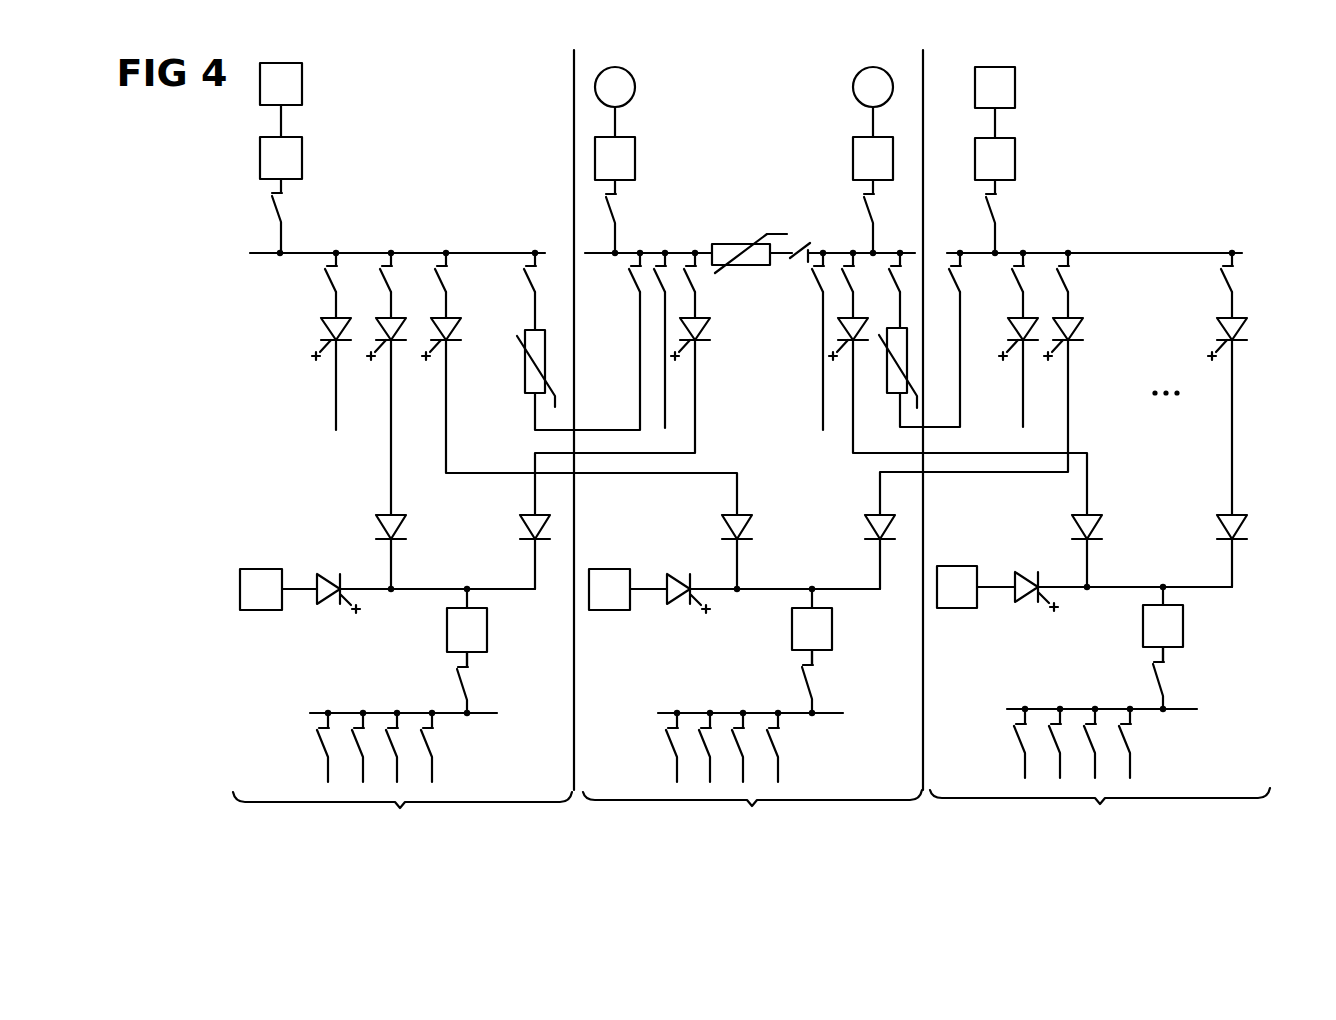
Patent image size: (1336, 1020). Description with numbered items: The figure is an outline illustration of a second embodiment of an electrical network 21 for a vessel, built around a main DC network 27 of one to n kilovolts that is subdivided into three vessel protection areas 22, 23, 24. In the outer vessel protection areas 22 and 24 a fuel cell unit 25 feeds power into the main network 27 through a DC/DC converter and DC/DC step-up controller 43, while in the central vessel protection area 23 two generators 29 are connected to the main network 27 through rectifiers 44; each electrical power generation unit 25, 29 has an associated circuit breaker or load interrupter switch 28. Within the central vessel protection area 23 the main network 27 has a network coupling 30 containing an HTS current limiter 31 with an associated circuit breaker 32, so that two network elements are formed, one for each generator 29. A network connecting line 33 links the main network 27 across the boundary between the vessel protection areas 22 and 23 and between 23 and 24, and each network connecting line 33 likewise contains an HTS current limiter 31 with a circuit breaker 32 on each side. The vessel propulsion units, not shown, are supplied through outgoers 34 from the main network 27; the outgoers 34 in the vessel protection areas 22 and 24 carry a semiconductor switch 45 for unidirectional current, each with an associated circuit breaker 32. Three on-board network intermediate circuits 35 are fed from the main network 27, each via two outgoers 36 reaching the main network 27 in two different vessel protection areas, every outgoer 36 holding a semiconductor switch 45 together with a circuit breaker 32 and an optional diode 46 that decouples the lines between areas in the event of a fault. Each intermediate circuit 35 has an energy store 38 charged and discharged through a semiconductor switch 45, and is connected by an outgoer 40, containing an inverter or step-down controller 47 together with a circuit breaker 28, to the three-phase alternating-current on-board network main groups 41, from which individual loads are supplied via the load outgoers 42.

The electrical network 21 is at (1168, 163).
The vessel protection area 22 is at (402, 820).
The vessel protection area 23 is at (752, 818).
The vessel protection area 24 is at (1100, 817).
The fuel cell unit 25 is at (1058, 80).
The main network 27 is at (1200, 252).
The circuit breaker or load interrupter switch 28 is at (267, 203).
The generator 29 is at (853, 87).
The network coupling 30 is at (777, 260).
The HTS current limiter 31 is at (523, 365).
The circuit breaker 32 is at (323, 282).
The network connecting line 33 is at (612, 427).
The outgoer 34 is at (333, 378).
The on-board network intermediate circuit 35 is at (377, 593).
The outgoer 36 is at (388, 424).
The energy store 38 is at (262, 569).
The outgoer 40 is at (467, 662).
The on-board network main group 41 is at (448, 713).
The load outgoer 42 is at (433, 762).
The DC/DC step-up controller 43 is at (1058, 152).
The rectifier 44 is at (853, 150).
The semiconductor switch 45 is at (320, 323).
The diode 46 is at (522, 523).
The inverter or step-down controller 47 is at (487, 627).